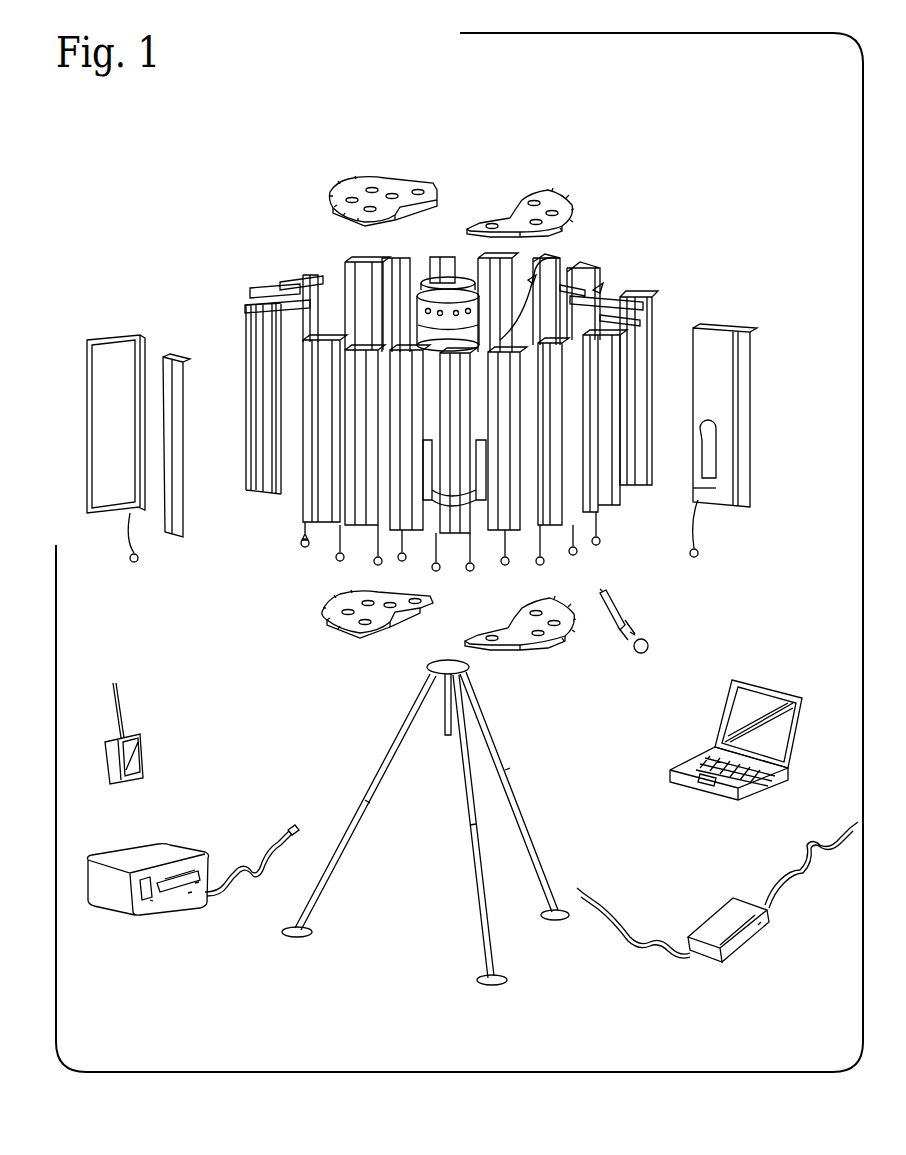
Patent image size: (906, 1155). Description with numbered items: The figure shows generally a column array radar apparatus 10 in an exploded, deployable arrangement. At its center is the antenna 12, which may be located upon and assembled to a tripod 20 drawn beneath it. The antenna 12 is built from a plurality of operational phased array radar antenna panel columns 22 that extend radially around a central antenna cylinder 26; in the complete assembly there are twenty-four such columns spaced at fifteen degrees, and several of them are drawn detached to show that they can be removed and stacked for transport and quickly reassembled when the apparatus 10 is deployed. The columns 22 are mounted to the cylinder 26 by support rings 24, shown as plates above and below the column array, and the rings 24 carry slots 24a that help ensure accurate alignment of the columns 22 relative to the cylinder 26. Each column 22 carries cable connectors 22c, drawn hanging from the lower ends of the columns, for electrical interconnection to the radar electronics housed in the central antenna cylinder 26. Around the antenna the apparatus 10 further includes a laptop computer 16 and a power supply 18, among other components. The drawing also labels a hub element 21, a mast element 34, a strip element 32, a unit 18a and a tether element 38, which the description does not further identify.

The column array radar apparatus 10 is at (757, 248).
The antenna 12 is at (607, 264).
The laptop computer 16 is at (788, 700).
The power supply 18 is at (112, 898).
The power supply 18a is at (743, 942).
The tripod 20 is at (505, 762).
The hub 21 is at (418, 288).
The operational phased array radar antenna panel column 22 is at (126, 437).
The cable connectors 22c is at (572, 552).
The support rings 24 is at (426, 190).
The slots 24a is at (556, 196).
The central antenna cylinder 26 is at (525, 268).
The strip 32 is at (183, 488).
The mast 34 is at (452, 262).
The tether 38 is at (640, 640).